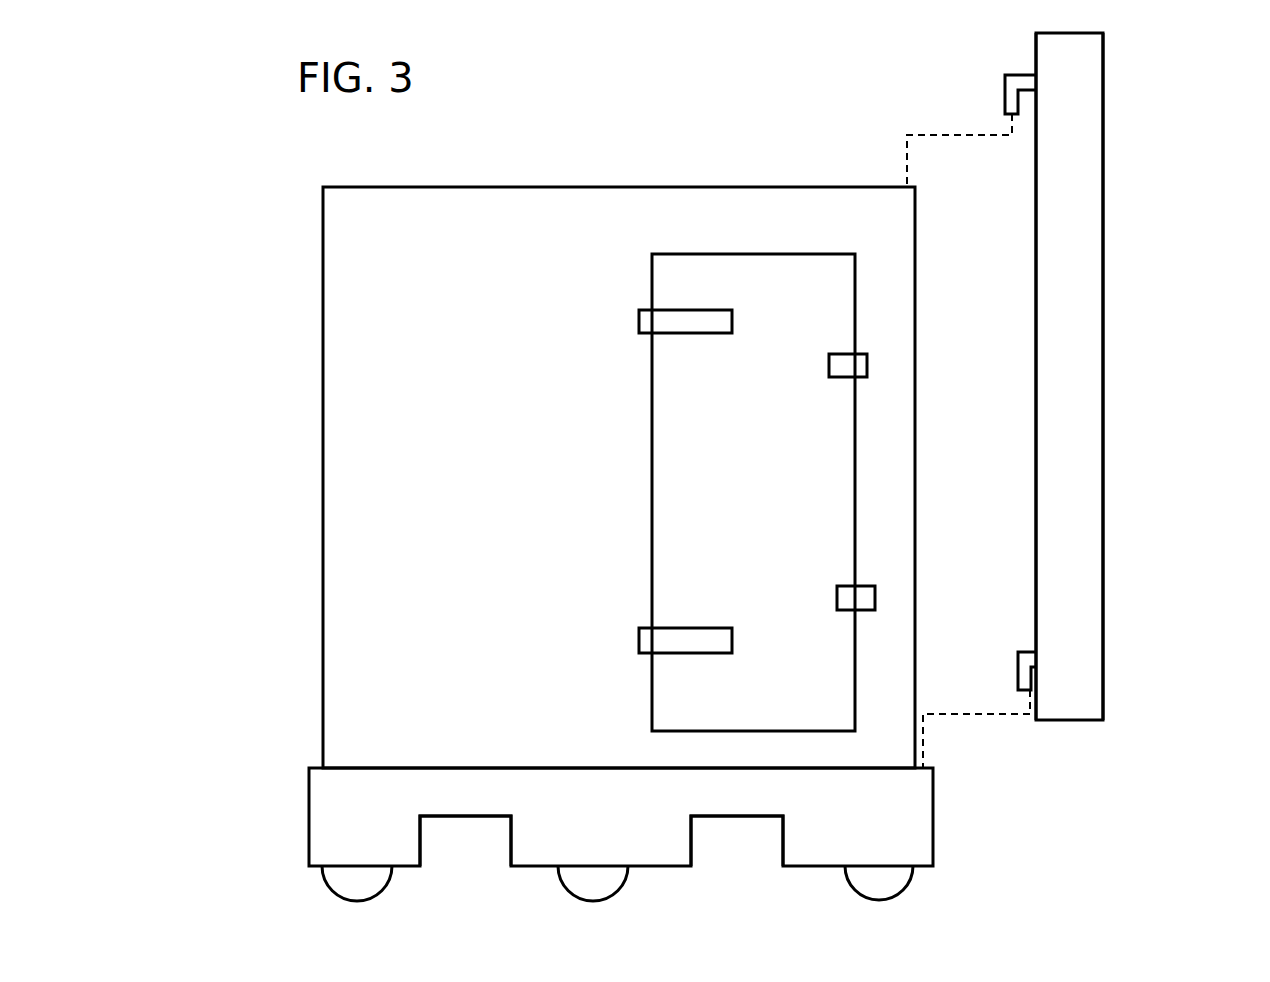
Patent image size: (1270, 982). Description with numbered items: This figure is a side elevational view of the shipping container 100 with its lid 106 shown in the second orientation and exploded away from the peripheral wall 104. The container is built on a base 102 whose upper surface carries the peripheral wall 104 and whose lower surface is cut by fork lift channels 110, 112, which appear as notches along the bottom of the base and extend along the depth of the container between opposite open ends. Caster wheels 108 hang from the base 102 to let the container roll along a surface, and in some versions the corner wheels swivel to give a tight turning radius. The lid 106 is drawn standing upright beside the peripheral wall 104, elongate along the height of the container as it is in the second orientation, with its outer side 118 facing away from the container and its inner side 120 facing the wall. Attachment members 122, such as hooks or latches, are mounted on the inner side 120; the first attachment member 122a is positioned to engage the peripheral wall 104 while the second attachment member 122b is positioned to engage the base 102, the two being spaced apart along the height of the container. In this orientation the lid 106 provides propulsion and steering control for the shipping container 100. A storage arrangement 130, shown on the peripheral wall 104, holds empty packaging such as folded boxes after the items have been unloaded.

The shipping container 100 is at (738, 150).
The base 102 is at (315, 808).
The peripheral wall 104 is at (352, 463).
The lid 106 is at (1103, 380).
The caster wheels 108 is at (340, 877).
The fork lift channel 110 is at (487, 816).
The fork lift channel 112 is at (747, 816).
The outer side 118 is at (1103, 512).
The inner side 120 is at (1036, 443).
The attachment members 122 is at (934, 398).
The first attachment member 122a is at (1005, 75).
The second attachment member 122b is at (1018, 652).
The storage arrangement 130 is at (640, 474).